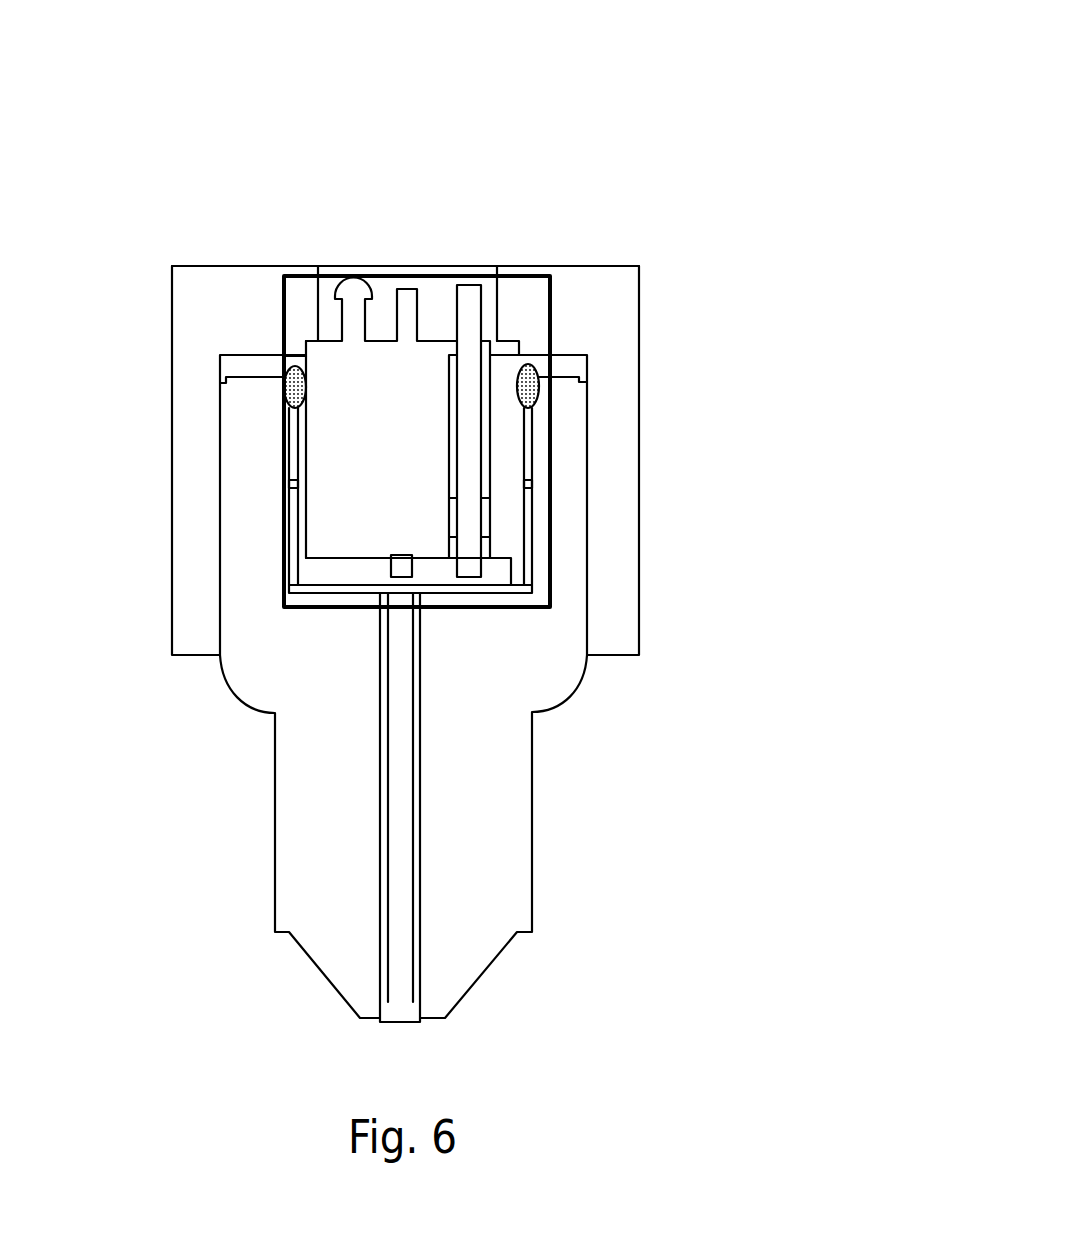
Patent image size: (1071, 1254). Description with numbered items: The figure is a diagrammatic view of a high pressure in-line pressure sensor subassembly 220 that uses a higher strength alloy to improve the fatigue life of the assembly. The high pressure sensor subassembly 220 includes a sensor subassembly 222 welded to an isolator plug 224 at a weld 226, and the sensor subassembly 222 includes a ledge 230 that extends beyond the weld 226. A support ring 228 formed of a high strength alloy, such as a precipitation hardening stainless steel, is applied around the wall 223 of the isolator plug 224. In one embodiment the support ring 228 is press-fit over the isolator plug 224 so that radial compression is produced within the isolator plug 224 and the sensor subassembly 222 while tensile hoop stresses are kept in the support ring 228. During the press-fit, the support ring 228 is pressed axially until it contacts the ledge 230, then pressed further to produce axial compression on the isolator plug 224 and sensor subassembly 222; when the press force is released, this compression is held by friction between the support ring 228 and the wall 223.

The high pressure sensor subassembly 220 is at (648, 90).
The sensor subassembly 222 is at (551, 470).
The wall 223 is at (586, 524).
The isolator plug 224 is at (578, 683).
The weld 226 is at (284, 393).
The support ring 228 is at (612, 265).
The ledge 230 is at (510, 340).